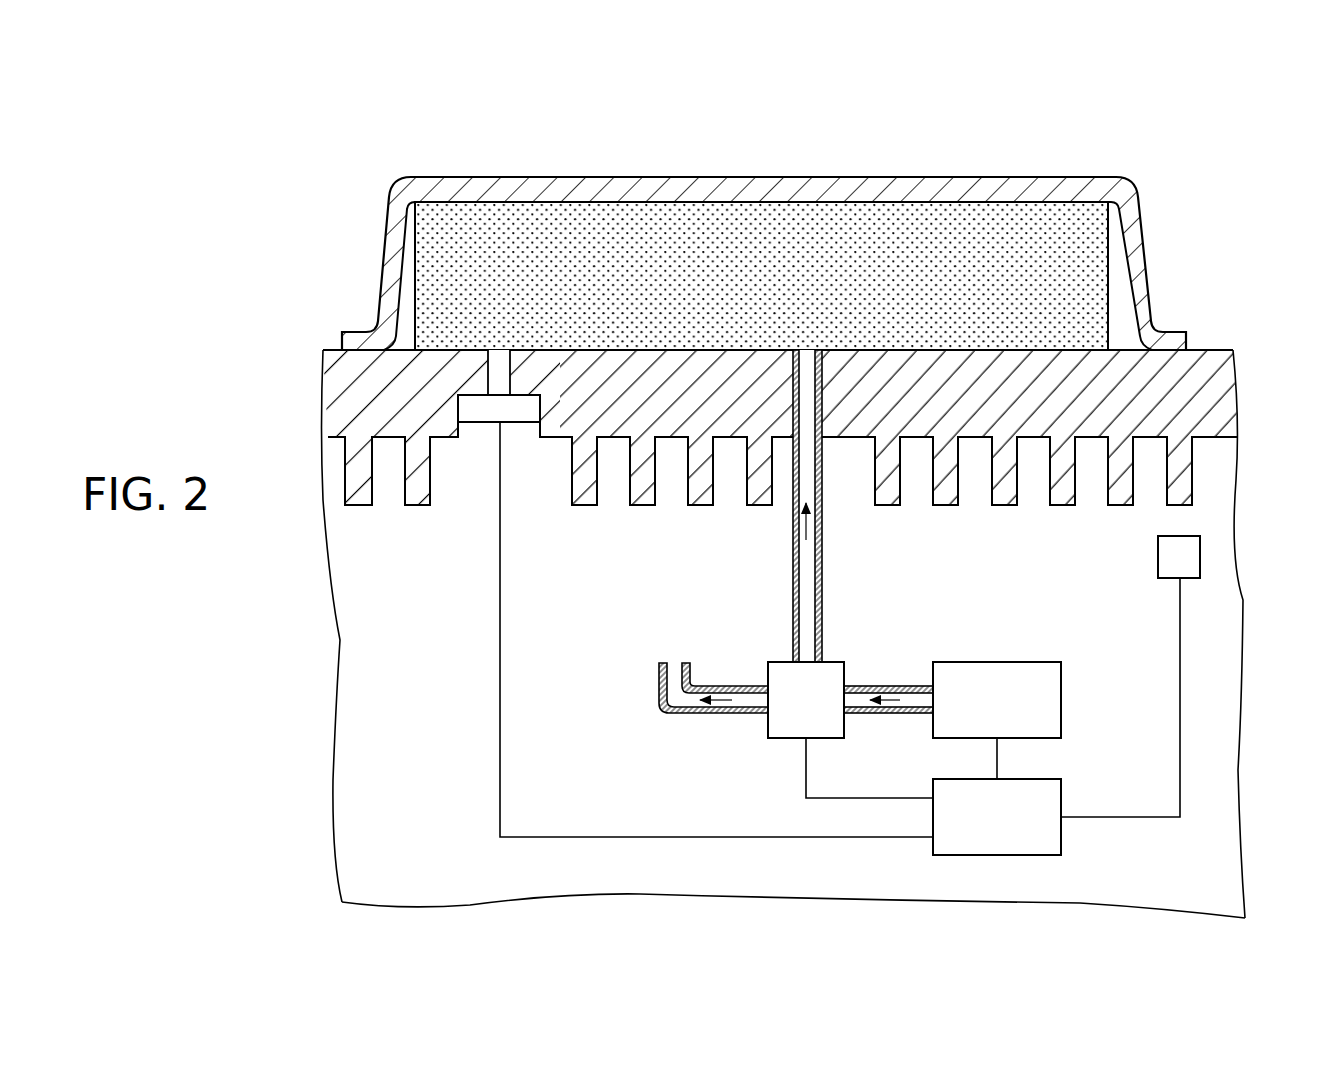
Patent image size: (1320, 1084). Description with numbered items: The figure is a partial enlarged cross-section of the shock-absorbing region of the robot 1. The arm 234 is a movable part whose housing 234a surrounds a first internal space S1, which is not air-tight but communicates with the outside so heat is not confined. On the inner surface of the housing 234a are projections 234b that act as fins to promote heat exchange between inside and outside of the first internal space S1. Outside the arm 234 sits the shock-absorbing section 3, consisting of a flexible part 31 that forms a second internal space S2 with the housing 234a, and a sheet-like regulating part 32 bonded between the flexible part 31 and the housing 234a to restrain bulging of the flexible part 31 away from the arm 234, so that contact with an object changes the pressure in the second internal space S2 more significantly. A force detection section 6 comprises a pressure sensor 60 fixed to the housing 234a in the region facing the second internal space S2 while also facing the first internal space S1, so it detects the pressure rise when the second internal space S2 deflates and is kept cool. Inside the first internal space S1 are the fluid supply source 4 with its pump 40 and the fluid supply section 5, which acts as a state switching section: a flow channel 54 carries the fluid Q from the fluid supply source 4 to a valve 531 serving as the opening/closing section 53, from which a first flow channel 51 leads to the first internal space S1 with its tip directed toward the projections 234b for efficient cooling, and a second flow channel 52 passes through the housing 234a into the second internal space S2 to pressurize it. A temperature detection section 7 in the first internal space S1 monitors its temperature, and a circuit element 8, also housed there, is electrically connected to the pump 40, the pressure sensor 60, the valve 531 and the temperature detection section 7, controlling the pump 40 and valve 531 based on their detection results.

The robot 1 is at (1173, 117).
The shock-absorbing section 3 is at (764, 218).
The flexible part 31 is at (694, 190).
The regulating part 32 is at (622, 230).
The second internal space S2 is at (805, 230).
The arm 234 is at (1213, 350).
The housing 234a is at (735, 417).
The projections 234b is at (584, 505).
The pressure sensor 60 is at (511, 410).
The force detection section 6 is at (695, 593).
The second flow channel 52 is at (822, 567).
The first flow channel 51 is at (725, 686).
The fluid Q is at (889, 686).
The pump 40 is at (1026, 662).
The fluid supply source 4 is at (1017, 691).
The flow channel 54 is at (881, 713).
The valve 531 is at (786, 740).
The opening/closing section 53 is at (839, 748).
The fluid supply section 5 is at (880, 592).
The temperature detection section 7 is at (1200, 556).
The circuit element 8 is at (1010, 855).
The first internal space S1 is at (1220, 668).